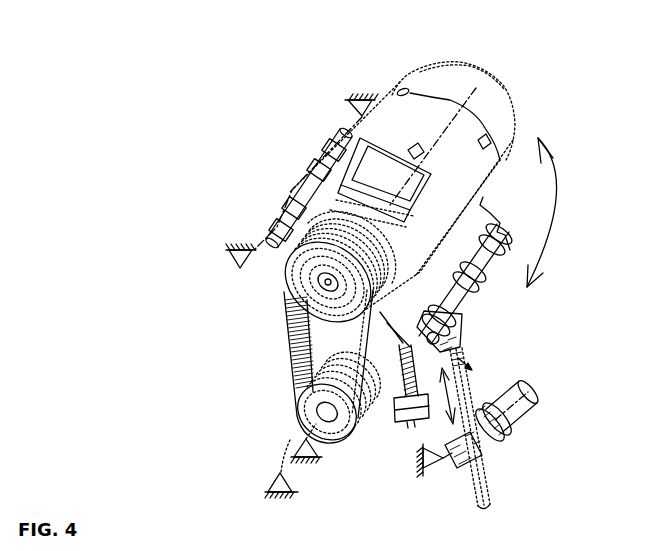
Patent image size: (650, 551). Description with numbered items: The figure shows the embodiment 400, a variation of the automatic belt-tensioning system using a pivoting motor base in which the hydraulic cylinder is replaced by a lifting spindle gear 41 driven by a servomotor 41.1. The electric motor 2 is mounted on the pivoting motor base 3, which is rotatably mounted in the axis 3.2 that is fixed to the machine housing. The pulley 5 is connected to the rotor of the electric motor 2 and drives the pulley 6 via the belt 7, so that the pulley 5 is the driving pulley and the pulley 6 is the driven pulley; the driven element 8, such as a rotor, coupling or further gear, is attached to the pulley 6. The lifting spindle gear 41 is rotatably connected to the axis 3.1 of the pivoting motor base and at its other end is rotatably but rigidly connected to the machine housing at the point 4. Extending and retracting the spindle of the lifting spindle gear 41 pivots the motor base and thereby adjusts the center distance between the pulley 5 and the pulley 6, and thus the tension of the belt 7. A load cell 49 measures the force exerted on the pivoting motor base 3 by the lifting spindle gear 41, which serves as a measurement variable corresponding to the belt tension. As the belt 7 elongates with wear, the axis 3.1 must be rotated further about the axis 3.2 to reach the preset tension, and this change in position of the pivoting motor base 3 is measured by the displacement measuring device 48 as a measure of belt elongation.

The embodiment 400 is at (130, 94).
The electric motor 2 is at (460, 58).
The pivoting motor base 3 is at (484, 199).
The axis 3.1 is at (478, 302).
The axis 3.2 is at (291, 181).
The point 4 is at (446, 464).
The pulley 5 is at (285, 298).
The pulley 6 is at (312, 428).
The belt 7 is at (284, 332).
The driven element 8 is at (300, 484).
The lifting spindle gear 41 is at (497, 457).
The servomotor 41.1 is at (536, 396).
The displacement measuring device 48 is at (402, 420).
The load cell 49 is at (467, 353).